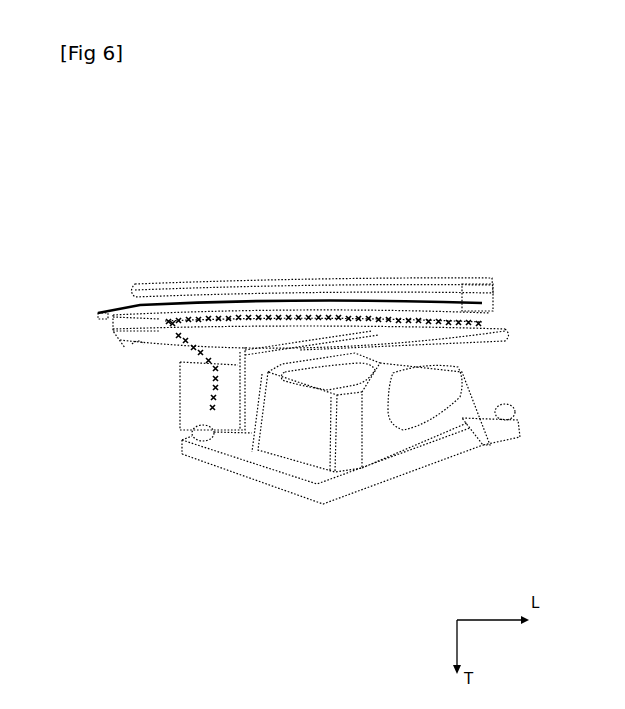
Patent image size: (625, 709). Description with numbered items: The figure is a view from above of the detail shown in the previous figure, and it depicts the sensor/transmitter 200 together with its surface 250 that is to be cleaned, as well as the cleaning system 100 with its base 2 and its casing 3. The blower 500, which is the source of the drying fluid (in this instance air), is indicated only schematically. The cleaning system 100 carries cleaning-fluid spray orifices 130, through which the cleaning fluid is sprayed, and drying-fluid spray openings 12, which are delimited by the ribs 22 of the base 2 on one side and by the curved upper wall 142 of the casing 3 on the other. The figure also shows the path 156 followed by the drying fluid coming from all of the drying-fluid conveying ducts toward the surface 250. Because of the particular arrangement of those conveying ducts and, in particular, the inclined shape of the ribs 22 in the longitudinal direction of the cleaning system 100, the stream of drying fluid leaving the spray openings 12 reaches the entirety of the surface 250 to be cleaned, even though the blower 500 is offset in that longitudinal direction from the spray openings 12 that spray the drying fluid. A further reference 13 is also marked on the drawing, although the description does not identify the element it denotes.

The cleaning system 100 is at (135, 405).
The cleaning-fluid spray orifices 130 is at (172, 295).
The curved upper wall 142 is at (470, 305).
The path 156 is at (263, 307).
The drying-fluid spray openings 12 is at (332, 307).
The ribs 22 is at (362, 309).
The end portion 13 is at (123, 323).
The casing 3 is at (93, 313).
The base 2 is at (175, 342).
The blower 500 is at (197, 408).
The sensor/transmitter 200 is at (381, 430).
The surface 250 is at (408, 320).